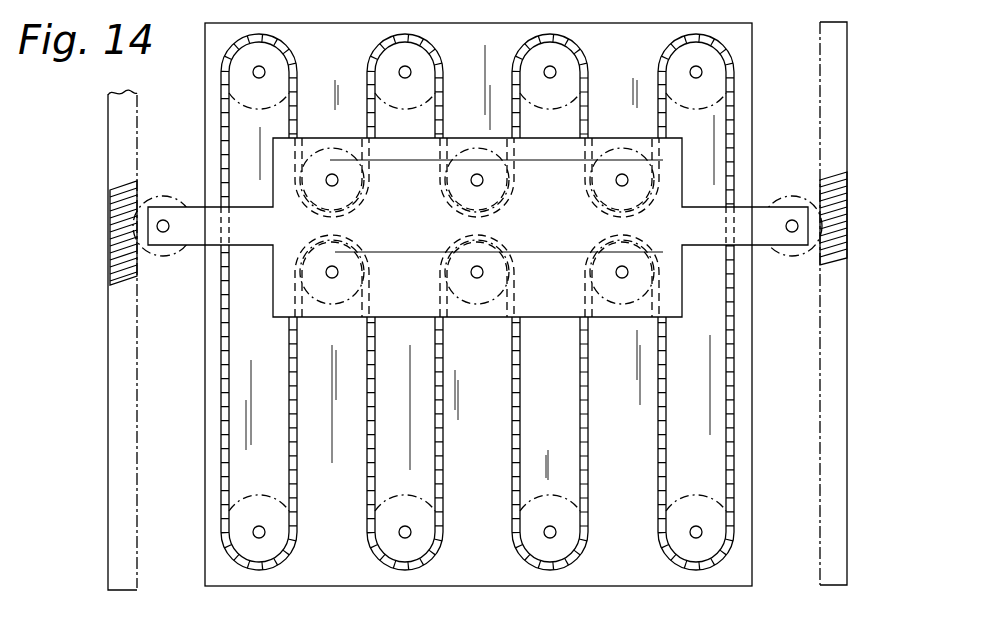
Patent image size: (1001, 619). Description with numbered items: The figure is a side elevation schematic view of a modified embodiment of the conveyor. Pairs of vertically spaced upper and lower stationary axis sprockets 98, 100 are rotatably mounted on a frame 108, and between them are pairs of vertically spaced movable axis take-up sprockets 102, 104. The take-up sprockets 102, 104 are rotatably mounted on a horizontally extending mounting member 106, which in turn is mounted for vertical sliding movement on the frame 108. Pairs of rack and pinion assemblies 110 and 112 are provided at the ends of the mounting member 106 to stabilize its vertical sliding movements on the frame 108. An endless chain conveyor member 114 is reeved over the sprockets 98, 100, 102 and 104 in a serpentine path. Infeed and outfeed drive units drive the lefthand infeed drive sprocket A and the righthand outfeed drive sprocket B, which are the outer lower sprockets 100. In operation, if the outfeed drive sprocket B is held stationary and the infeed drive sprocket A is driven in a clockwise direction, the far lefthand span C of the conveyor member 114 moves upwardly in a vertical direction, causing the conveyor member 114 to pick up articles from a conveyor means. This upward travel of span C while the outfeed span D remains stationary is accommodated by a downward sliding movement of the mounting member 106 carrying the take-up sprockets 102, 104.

The upper stationary axis sprocket 98 is at (390, 57).
The lower stationary axis sprocket 100 is at (388, 524).
The movable axis take-up sprocket 102 is at (426, 190).
The movable axis take-up sprocket 104 is at (426, 282).
The mounting member 106 is at (280, 283).
The frame 108 is at (722, 23).
The rack and pinion assembly 110 is at (184, 184).
The rack and pinion assembly 112 is at (115, 155).
The endless chain conveyor member 114 is at (735, 408).
The infeed drive sprocket A is at (248, 523).
The outfeed drive sprocket B is at (712, 523).
The far lefthand span C is at (226, 373).
The outfeed span D is at (735, 325).